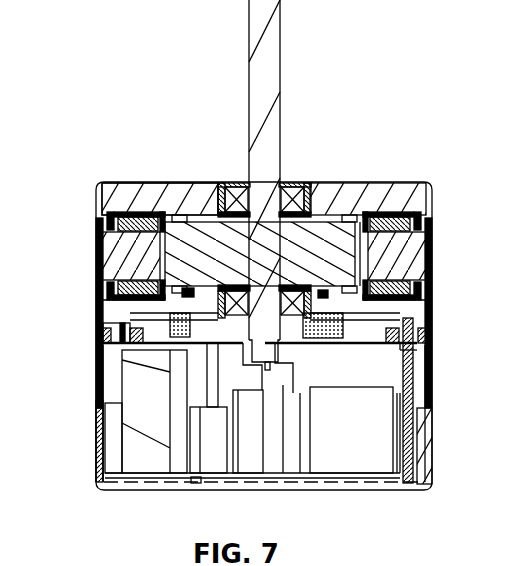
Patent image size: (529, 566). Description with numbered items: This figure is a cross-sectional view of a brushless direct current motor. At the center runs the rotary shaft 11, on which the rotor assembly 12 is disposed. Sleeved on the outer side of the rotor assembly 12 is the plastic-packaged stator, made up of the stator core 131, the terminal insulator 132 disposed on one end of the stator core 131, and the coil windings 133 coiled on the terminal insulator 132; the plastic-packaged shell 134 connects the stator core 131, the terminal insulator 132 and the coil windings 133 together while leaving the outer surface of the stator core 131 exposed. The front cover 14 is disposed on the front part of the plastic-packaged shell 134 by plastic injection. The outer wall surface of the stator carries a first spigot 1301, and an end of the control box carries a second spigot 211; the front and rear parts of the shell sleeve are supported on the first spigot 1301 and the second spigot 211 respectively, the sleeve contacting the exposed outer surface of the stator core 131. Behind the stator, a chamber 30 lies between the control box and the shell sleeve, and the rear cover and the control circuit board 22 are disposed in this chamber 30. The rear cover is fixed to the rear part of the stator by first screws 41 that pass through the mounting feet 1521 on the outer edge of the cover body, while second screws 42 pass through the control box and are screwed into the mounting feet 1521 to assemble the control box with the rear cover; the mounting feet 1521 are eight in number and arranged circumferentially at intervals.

The rotary shaft 11 is at (265, 78).
The rotor assembly 12 is at (320, 252).
The front cover 14 is at (297, 187).
The stator core 131 is at (428, 252).
The terminal insulator 132 is at (420, 222).
The coil windings 133 is at (388, 203).
The plastic-packaged shell 134 is at (172, 197).
The first spigot 1301 is at (100, 220).
The first screws 41 is at (100, 326).
The mounting feet 1521 is at (100, 334).
The second screws 42 is at (413, 373).
The second spigot 211 is at (99, 405).
The control circuit board 22 is at (202, 476).
The chamber 30 is at (320, 362).